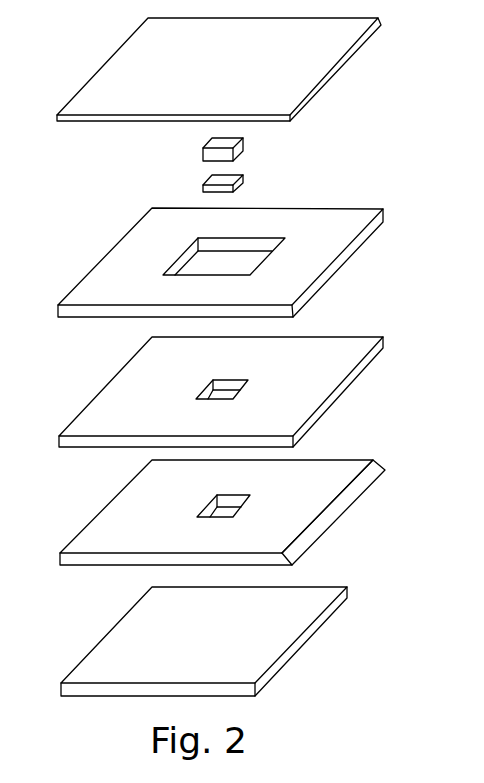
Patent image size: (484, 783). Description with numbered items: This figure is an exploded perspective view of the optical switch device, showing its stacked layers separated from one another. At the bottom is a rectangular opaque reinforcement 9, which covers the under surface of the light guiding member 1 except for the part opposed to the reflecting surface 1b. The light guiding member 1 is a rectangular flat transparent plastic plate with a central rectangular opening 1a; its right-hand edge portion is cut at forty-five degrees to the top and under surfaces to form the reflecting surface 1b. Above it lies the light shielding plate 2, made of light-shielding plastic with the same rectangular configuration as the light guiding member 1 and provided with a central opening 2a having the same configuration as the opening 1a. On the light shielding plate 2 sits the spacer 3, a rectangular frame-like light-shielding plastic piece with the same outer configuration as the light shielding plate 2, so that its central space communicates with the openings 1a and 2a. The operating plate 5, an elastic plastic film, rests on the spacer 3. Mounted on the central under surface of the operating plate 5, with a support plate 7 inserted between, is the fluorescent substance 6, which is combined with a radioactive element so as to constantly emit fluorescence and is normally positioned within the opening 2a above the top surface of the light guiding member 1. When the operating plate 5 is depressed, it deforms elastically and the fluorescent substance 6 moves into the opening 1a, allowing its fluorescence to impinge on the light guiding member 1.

The light guiding member 1 is at (222, 512).
The central rectangular opening 1a is at (237, 498).
The reflecting surface 1b is at (338, 508).
The light shielding plate 2 is at (97, 405).
The central opening 2a is at (243, 381).
The spacer 3 is at (108, 267).
The operating plate 5 is at (108, 68).
The fluorescent substance 6 is at (242, 180).
The support plate 7 is at (240, 147).
The opaque reinforcement 9 is at (108, 642).